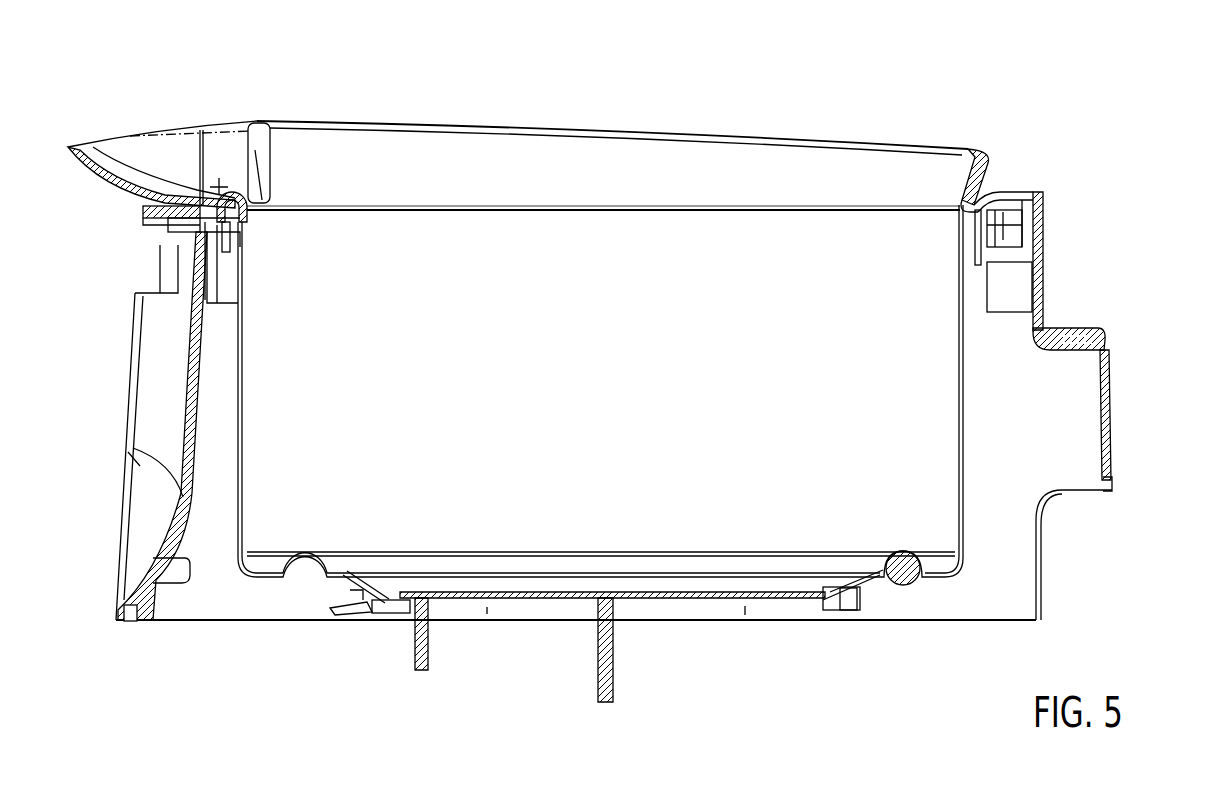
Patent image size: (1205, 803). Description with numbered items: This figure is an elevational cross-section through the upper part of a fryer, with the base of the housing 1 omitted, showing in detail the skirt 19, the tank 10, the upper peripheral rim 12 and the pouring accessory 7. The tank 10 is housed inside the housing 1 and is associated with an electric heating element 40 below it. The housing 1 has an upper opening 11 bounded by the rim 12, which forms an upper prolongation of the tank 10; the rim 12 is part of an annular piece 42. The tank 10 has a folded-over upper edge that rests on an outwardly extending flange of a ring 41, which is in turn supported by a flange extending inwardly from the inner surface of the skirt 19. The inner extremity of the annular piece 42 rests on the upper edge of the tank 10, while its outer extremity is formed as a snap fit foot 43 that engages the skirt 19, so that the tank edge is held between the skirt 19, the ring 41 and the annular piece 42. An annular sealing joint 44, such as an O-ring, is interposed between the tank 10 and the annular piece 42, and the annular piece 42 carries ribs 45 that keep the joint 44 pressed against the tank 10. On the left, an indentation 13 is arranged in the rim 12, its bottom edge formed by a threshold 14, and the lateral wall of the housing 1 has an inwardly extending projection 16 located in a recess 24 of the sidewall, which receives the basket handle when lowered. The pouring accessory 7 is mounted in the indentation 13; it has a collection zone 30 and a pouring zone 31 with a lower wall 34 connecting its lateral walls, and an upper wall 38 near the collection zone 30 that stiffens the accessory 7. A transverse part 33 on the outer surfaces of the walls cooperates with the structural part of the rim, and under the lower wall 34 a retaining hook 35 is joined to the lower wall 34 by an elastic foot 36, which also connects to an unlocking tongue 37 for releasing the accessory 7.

The housing 1 is at (1118, 350).
The pouring accessory 7 is at (155, 125).
The tank 10 is at (243, 390).
The upper opening 11 is at (608, 187).
The upper peripheral rim 12 is at (930, 145).
The indentation 13 is at (240, 185).
The threshold 14 is at (243, 205).
The projection 16 is at (200, 200).
The skirt 19 is at (1107, 460).
The recess 24 is at (153, 412).
The collection zone 30 is at (222, 195).
The pouring zone 31 is at (115, 145).
The transverse part 33 is at (197, 227).
The lower wall 34 is at (105, 162).
The retaining hook 35 is at (197, 220).
The elastic foot 36 is at (140, 200).
The unlocking tongue 37 is at (150, 213).
The upper wall 38 is at (142, 120).
The electric heating element 40 is at (902, 583).
The ring 41 is at (988, 230).
The annular piece 42 is at (990, 170).
The snap fit foot 43 is at (1030, 228).
The annular sealing joint 44 is at (243, 210).
The ribs 45 is at (997, 200).